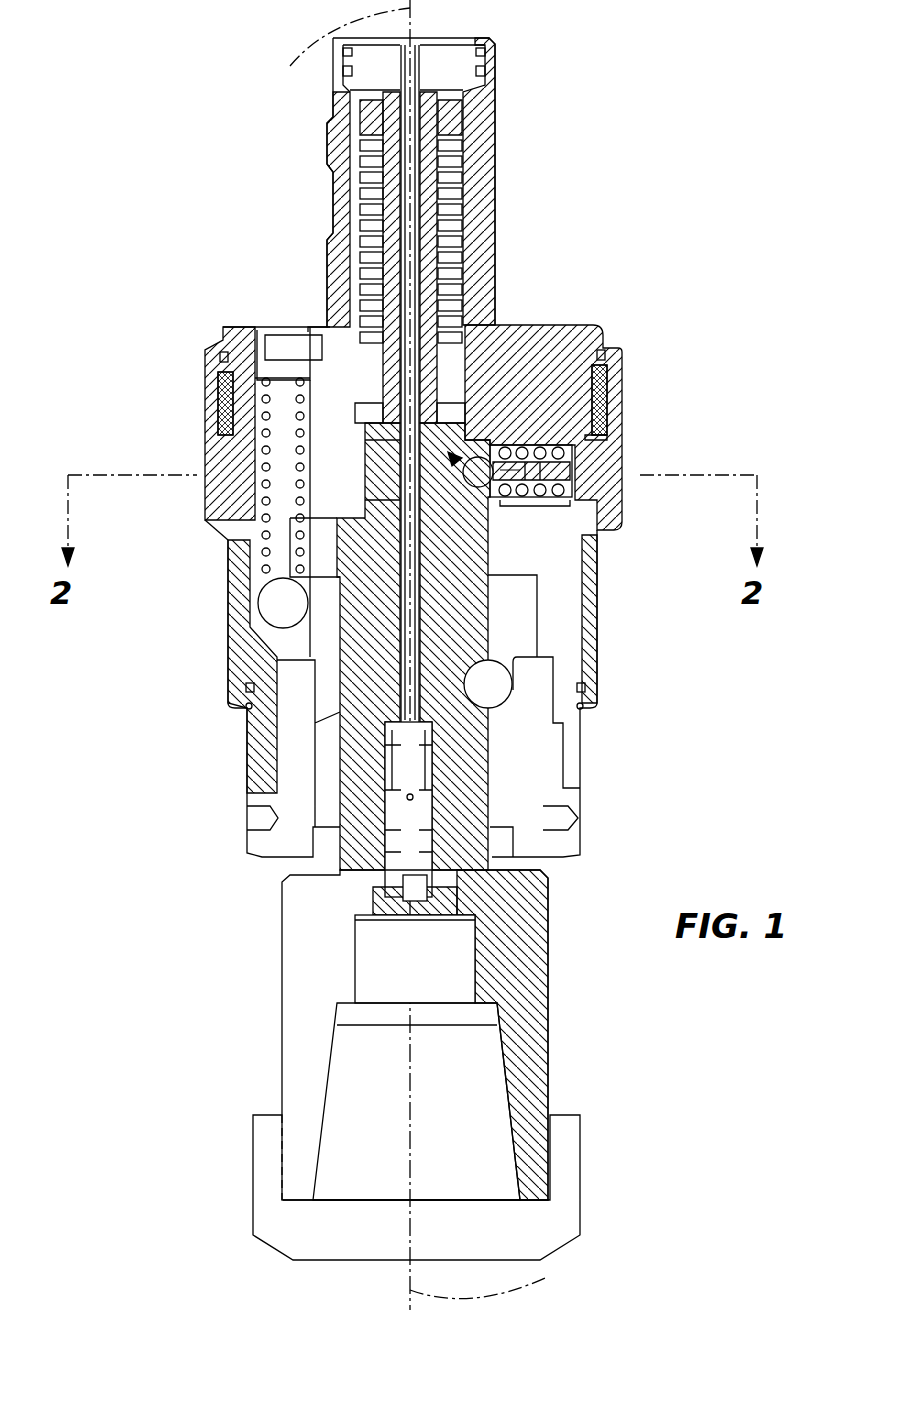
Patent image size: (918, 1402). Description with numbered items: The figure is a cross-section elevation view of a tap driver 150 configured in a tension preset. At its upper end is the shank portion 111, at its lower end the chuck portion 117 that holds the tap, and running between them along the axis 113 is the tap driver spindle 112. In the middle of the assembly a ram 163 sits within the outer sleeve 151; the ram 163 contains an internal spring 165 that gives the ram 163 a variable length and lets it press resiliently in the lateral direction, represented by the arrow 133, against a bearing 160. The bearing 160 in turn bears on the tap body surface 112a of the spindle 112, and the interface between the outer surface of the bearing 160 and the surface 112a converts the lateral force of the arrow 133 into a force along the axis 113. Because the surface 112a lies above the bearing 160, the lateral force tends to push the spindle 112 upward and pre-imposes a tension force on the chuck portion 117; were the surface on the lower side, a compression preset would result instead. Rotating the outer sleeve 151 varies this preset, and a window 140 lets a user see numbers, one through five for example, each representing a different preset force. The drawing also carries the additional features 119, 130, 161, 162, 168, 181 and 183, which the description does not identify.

The tap driver 150 is at (640, 106).
The shank portion 111 is at (477, 123).
The tap driver spindle 112 is at (490, 588).
The tap body surface 112a is at (445, 452).
The axis 113 is at (436, 655).
The chuck portion 117 is at (366, 1160).
The lower ball 119 is at (500, 686).
The spring stack 130 is at (455, 395).
The arrow 133 is at (520, 395).
The window 140 is at (222, 400).
The outer sleeve 151 is at (205, 520).
The bearing 160 is at (480, 474).
The bore 161 is at (610, 530).
The passage 162 is at (478, 455).
The ram 163 is at (604, 356).
The internal spring 165 is at (575, 490).
The retaining ring 168 is at (610, 405).
The first surface 181 is at (462, 472).
The second surface 183 is at (462, 512).